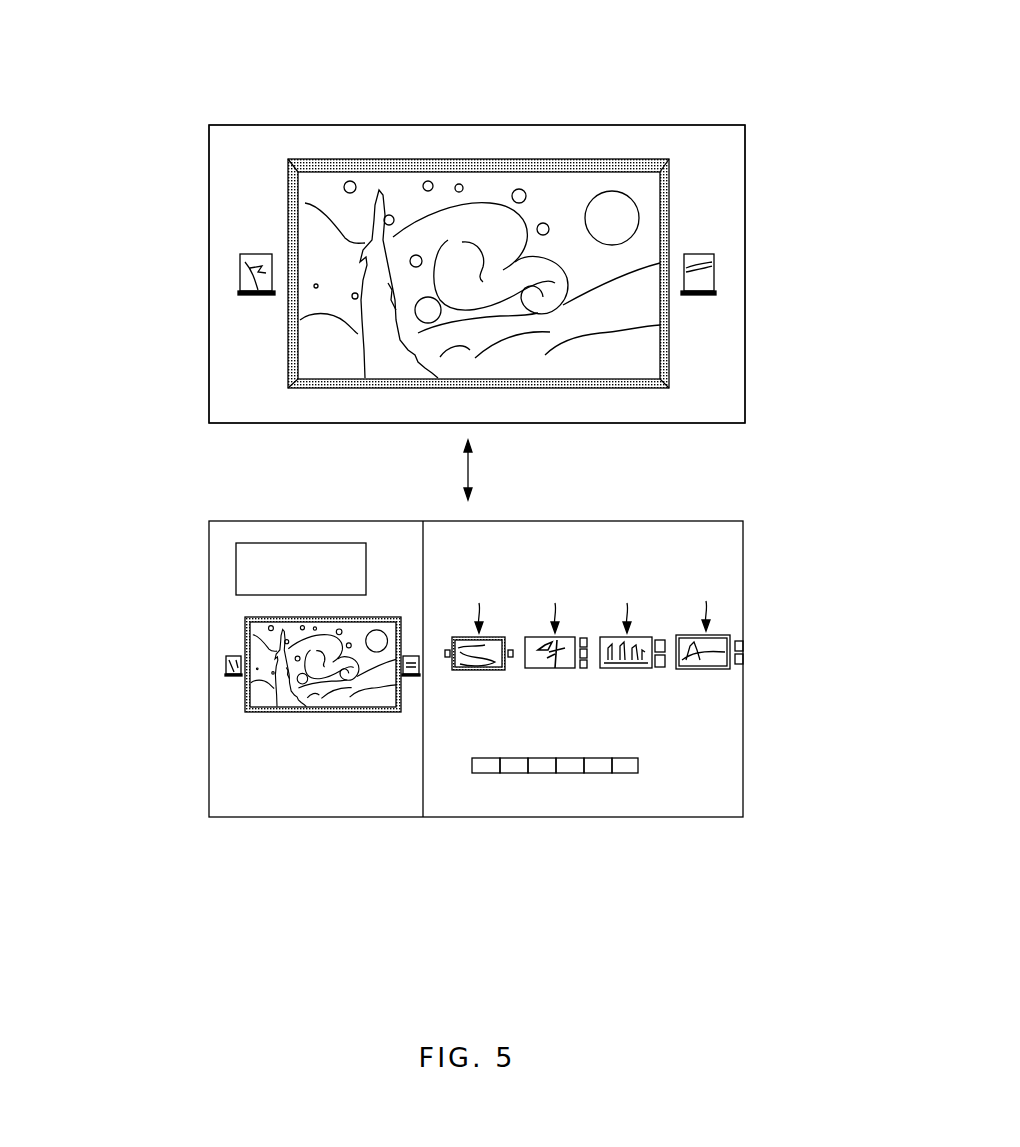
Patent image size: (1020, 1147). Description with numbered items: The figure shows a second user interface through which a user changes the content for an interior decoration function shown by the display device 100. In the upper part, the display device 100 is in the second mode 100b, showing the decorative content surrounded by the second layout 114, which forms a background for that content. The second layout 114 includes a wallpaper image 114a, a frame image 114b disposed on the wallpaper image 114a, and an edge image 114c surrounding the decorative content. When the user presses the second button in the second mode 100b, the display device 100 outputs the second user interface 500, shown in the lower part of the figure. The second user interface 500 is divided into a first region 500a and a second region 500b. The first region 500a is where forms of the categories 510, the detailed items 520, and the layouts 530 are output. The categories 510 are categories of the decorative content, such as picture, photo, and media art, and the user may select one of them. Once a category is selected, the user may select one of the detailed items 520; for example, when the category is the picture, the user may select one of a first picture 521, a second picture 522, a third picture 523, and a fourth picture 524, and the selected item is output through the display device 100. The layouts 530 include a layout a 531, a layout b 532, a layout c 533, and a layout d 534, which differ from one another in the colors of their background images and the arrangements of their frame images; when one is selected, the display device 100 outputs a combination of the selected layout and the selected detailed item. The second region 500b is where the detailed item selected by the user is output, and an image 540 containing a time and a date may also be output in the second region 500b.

The display device 100 is at (623, 424).
The second mode 100b is at (540, 95).
The second layout 114 is at (437, 247).
The wallpaper image 114a is at (468, 140).
The frame image 114b is at (705, 274).
The edge image 114c is at (620, 165).
The second user interface 500 is at (449, 743).
The first region 500a is at (676, 806).
The second region 500b is at (283, 806).
The categories 510 is at (556, 788).
The detailed items 520 is at (594, 694).
The first picture 521 is at (480, 671).
The second picture 522 is at (550, 669).
The third picture 523 is at (622, 669).
The fourth picture 524 is at (709, 672).
The layouts 530 is at (591, 585).
The layout a 531 is at (479, 606).
The layout b 532 is at (555, 606).
The layout c 533 is at (627, 606).
The layout d 534 is at (706, 604).
The image containing a time and a date 540 is at (253, 543).